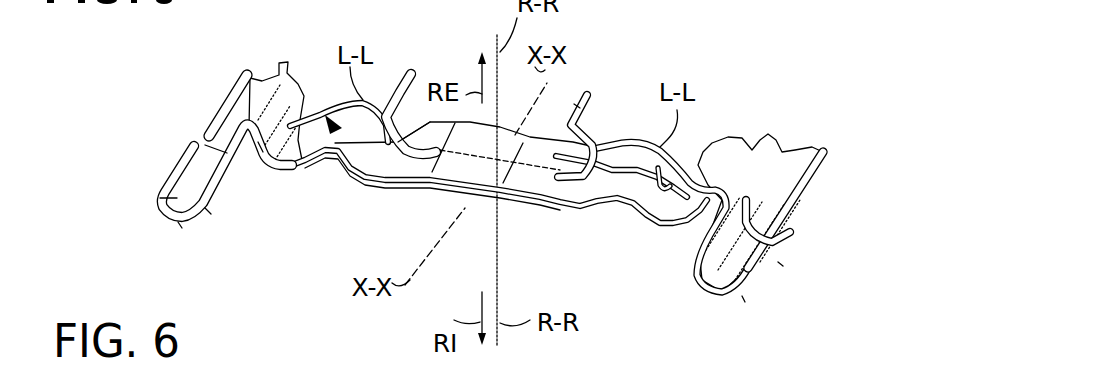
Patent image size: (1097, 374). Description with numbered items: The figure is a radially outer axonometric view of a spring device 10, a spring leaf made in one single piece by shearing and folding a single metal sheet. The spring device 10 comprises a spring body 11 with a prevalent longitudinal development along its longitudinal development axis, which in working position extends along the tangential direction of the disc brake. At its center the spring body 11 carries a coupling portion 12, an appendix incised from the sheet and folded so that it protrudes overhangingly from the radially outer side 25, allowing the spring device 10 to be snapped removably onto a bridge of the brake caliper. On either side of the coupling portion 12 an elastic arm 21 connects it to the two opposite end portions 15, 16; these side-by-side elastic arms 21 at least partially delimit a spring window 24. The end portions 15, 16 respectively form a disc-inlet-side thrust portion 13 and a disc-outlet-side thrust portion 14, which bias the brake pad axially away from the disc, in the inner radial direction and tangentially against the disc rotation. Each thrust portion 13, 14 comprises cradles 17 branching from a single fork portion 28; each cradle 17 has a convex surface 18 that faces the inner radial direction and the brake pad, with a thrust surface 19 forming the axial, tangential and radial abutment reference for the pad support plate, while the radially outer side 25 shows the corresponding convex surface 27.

The spring device 10 is at (748, 96).
The spring body 11 is at (493, 190).
The coupling portion 12 is at (420, 75).
The disc-inlet-side thrust portion 13 is at (203, 138).
The disc-outlet-side thrust portion 14 is at (792, 233).
The end portion 15 is at (200, 97).
The end portion 16 is at (814, 225).
The cradle 17 is at (240, 103).
The convex surface 18 is at (177, 227).
The thrust surface 19 is at (207, 213).
The elastic arm 21 is at (377, 100).
The spring window 24 is at (282, 183).
The radially outer side 25 is at (578, 100).
The convex surface 27 is at (180, 160).
The fork portion 28 is at (263, 83).